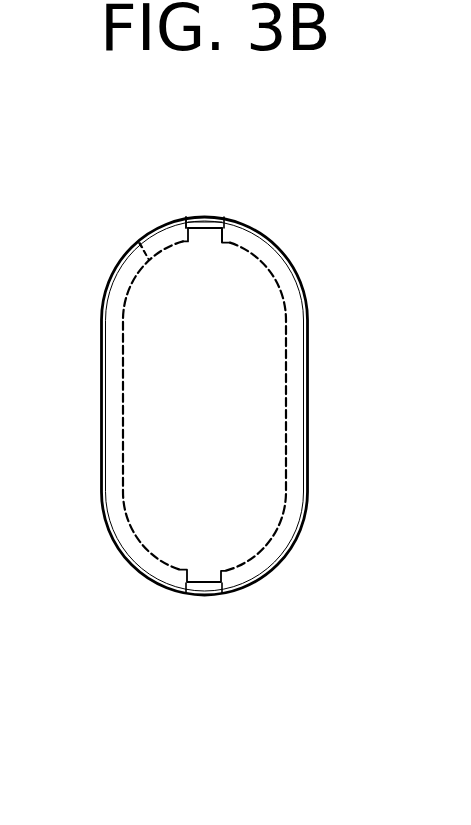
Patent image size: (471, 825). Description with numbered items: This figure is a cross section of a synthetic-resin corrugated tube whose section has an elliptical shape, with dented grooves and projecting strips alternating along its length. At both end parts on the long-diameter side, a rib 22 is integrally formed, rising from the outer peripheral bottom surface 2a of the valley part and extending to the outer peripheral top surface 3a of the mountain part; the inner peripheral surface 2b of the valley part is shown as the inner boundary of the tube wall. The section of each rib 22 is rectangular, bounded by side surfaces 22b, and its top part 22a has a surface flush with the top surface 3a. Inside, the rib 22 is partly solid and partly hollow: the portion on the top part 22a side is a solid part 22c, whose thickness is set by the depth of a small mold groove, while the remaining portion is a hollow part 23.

The top surface of the mountain part 3a is at (110, 278).
The bottom surface of the valley part 2a is at (180, 235).
The inner peripheral surface of the valley part 2b is at (162, 249).
The rib 22 is at (213, 217).
The top part of the rib 22a is at (197, 217).
The side surface of the rib 22b is at (148, 233).
The solid part of the rib 22c is at (190, 217).
The hollow part of the rib 23 is at (208, 236).